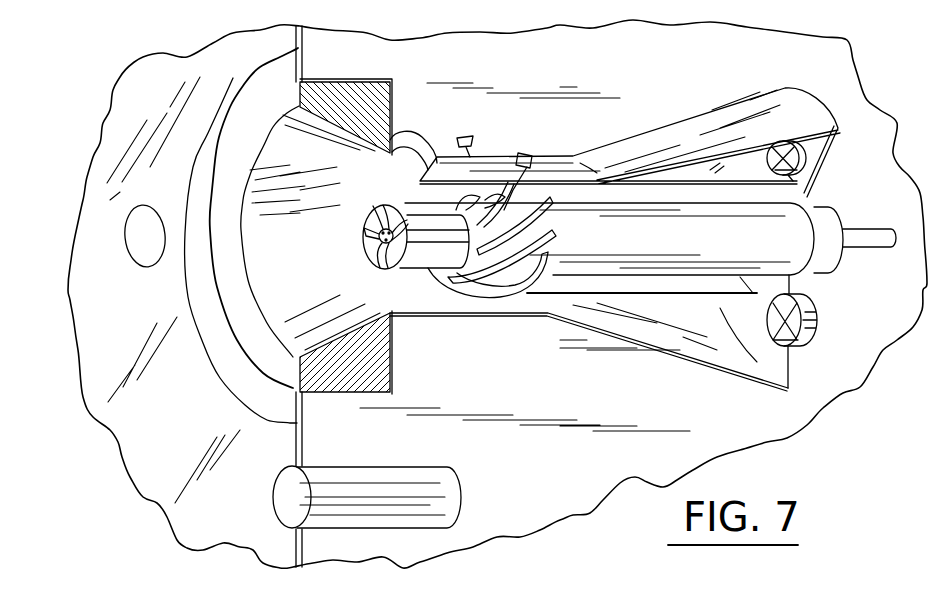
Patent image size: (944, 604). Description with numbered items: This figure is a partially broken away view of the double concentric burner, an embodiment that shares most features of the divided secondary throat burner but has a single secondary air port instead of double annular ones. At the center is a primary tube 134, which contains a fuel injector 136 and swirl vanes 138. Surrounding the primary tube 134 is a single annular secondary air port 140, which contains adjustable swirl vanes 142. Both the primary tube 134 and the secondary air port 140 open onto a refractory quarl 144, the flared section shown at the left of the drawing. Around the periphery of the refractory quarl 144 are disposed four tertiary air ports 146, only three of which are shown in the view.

The primary tube 134 is at (418, 268).
The fuel injector 136 is at (405, 268).
The swirl vanes 138 is at (433, 273).
The secondary air port 140 is at (529, 295).
The adjustable swirl vanes 142 is at (495, 296).
The refractory quarl 144 is at (306, 283).
The tertiary air ports 146 is at (147, 243).